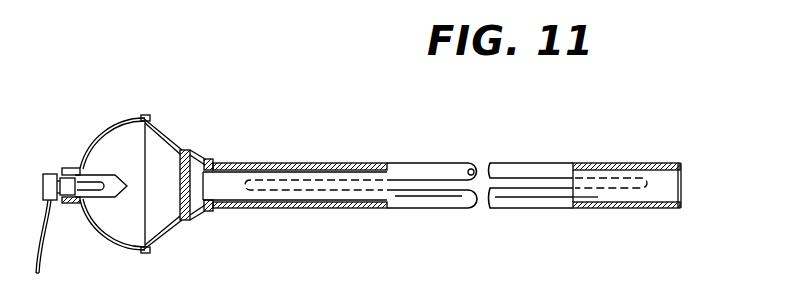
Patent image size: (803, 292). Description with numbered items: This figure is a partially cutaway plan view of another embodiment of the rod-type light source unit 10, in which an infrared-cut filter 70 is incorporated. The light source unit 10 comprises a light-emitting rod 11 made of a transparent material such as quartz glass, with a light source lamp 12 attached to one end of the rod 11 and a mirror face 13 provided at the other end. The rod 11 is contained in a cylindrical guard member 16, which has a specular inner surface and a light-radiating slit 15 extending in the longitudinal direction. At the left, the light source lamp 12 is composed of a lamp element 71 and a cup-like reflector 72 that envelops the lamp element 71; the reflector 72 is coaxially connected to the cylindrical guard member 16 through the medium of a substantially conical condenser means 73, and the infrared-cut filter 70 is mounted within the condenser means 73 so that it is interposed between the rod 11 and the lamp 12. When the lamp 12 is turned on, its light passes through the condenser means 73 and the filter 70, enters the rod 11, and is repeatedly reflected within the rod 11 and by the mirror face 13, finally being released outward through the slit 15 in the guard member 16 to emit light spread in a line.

The light source unit 10 is at (298, 151).
The light-emitting rod 11 is at (368, 177).
The light source lamp 12 is at (52, 72).
The mirror face 13 is at (683, 180).
The light-radiating slit 15 is at (535, 187).
The cylindrical guard member 16 is at (557, 170).
The infrared-cut filter 70 is at (196, 158).
The lamp element 71 is at (118, 175).
The cup-like reflector 72 is at (92, 143).
The condenser means 73 is at (181, 150).